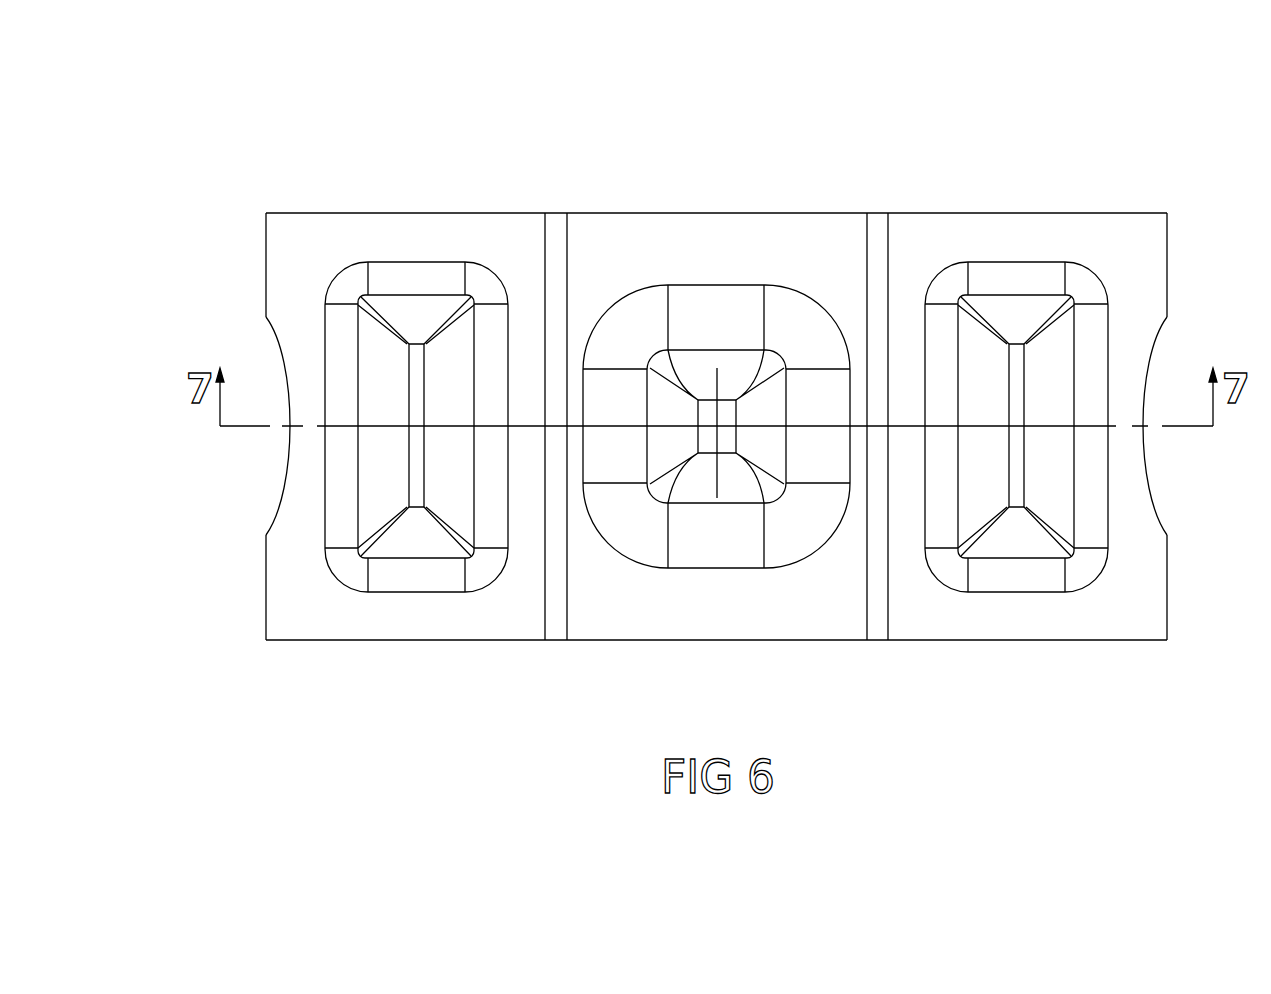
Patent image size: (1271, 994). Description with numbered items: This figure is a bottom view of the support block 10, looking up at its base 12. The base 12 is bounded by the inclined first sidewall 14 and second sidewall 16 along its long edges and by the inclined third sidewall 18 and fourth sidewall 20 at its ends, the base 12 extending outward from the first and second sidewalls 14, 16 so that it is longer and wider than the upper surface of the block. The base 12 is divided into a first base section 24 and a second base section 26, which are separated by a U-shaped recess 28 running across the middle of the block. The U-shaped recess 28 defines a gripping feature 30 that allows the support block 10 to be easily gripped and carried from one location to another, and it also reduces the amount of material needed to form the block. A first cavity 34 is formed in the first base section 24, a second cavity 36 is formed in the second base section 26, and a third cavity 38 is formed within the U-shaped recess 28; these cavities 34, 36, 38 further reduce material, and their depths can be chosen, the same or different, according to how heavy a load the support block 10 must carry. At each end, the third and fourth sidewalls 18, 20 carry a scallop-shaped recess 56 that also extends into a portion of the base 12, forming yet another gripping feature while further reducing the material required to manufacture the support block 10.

The support block 10 is at (711, 407).
The base 12 is at (711, 436).
The first sidewall 14 is at (916, 213).
The second sidewall 16 is at (503, 642).
The third sidewall 18 is at (1167, 263).
The fourth sidewall 20 is at (266, 591).
The first base section 24 is at (1067, 478).
The second base section 26 is at (466, 630).
The U-shaped recess 28 is at (797, 623).
The gripping feature 30 is at (720, 434).
The first cavity 34 is at (1090, 563).
The second cavity 36 is at (396, 577).
The third cavity 38 is at (805, 325).
The scallop-shaped recess 56 is at (1150, 490).